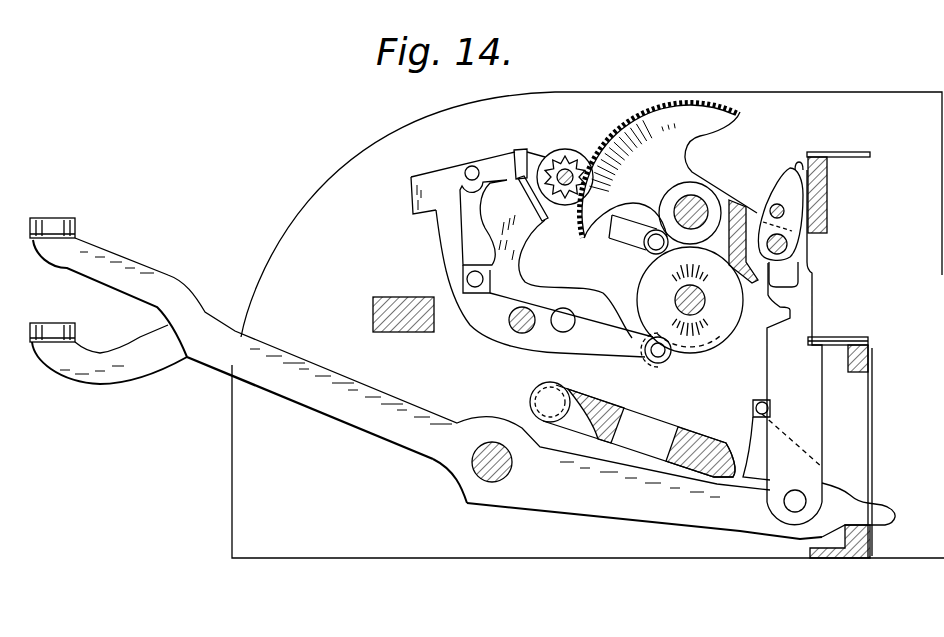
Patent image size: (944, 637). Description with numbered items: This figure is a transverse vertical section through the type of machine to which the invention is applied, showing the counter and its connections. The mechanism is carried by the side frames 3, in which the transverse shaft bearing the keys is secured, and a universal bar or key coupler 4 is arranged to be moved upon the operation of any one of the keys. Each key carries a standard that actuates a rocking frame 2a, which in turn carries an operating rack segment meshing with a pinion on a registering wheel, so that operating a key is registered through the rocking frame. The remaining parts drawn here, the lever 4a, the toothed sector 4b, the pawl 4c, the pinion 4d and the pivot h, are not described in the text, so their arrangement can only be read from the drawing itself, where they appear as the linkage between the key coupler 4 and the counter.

The side frames 3 is at (485, 388).
The universal bar or key coupler 4 is at (100, 353).
The vertical pivoted lever 4a is at (777, 358).
The toothed sector 4b is at (692, 121).
The pawl 4c is at (547, 145).
The pinion gear 4d is at (567, 155).
The rocking frame 2a is at (720, 205).
The pivot pin h is at (512, 474).